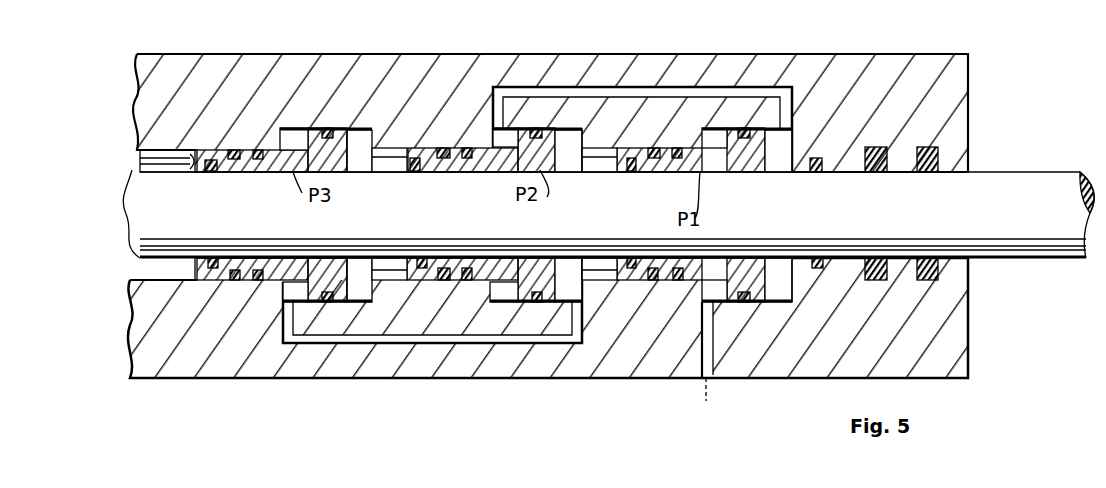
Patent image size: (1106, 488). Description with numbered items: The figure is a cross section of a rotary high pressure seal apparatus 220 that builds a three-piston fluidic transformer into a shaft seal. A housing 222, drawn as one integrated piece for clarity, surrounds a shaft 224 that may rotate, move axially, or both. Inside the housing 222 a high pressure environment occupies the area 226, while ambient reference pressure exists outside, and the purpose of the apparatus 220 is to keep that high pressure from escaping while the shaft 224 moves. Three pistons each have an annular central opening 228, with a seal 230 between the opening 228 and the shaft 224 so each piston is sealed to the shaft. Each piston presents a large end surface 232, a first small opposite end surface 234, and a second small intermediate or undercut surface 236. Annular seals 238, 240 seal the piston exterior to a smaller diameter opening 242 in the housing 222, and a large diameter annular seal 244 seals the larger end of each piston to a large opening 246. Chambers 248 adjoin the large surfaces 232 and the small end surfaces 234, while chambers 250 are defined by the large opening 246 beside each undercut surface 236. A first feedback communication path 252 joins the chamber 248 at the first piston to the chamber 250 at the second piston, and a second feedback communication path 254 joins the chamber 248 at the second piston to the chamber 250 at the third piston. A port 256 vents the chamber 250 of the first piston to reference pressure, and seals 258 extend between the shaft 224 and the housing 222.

The apparatus 220 is at (978, 101).
The housing 222 is at (455, 55).
The shaft 224 is at (997, 240).
The area 226 is at (148, 162).
The annular central opening 228 is at (748, 170).
The seal 230 is at (420, 172).
The large end surface 232 is at (768, 170).
The first small opposite end surface 234 is at (200, 150).
The second small intermediate or undercut surface 236 is at (300, 128).
The annular seal 238 is at (443, 150).
The annular seal 240 is at (467, 150).
The smaller diameter opening 242 is at (380, 156).
The large diameter annular seal 244 is at (323, 128).
The large opening 246 is at (360, 132).
The chamber 248 is at (347, 150).
The chamber 250 is at (700, 108).
The first feedback communication path 252 is at (663, 88).
The second feedback communication path 254 is at (413, 344).
The port 256 is at (713, 358).
The seals 258 is at (825, 258).